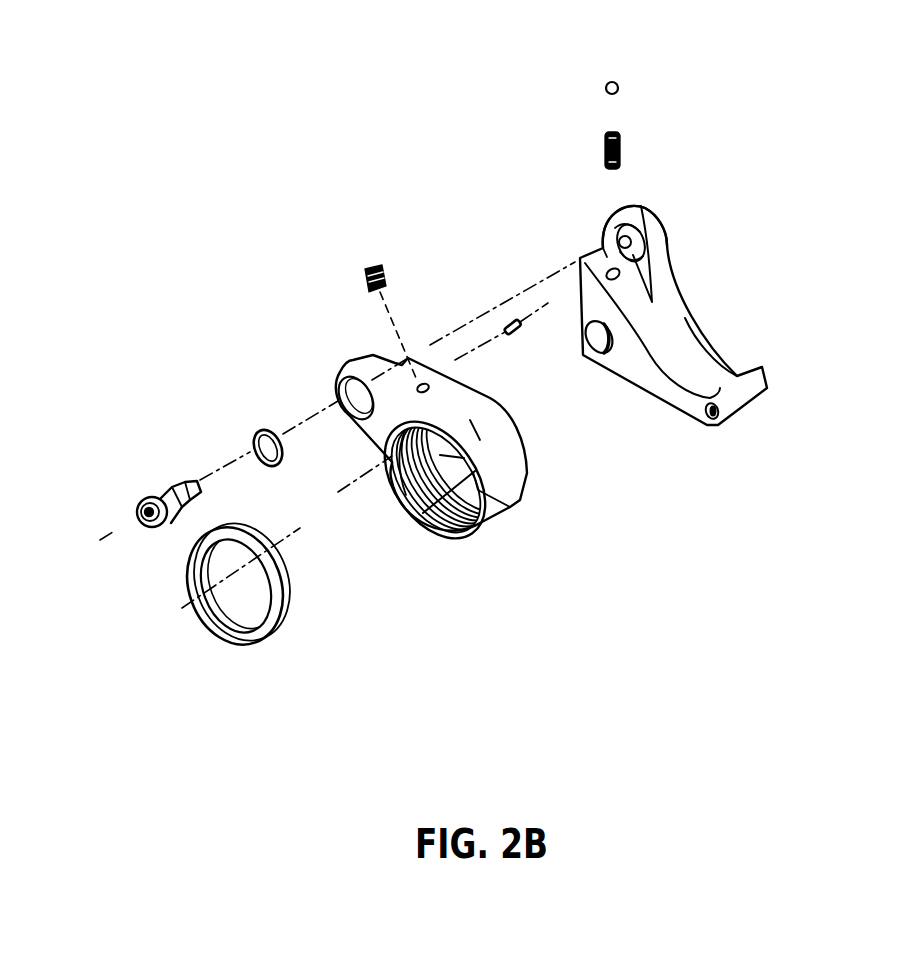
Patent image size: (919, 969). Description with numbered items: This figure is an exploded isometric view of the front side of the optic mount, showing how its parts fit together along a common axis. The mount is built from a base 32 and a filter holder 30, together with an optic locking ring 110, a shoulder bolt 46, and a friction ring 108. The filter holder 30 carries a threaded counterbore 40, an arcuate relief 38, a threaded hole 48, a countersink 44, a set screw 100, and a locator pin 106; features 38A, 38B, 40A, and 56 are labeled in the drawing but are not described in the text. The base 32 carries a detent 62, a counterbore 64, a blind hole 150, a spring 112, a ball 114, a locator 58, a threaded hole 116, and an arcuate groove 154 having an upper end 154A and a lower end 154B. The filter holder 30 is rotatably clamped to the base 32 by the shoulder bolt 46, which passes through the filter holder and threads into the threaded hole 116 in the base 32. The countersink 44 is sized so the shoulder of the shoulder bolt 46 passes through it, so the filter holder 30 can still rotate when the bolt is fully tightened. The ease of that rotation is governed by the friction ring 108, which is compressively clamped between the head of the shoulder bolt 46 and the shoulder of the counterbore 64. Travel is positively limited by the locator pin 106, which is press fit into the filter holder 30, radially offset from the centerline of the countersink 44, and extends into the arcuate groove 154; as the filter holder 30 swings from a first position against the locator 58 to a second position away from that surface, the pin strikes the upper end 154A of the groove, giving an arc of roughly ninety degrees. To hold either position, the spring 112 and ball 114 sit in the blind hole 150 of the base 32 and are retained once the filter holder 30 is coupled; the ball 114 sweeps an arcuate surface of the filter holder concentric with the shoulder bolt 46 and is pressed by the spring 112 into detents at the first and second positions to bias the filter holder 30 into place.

The filter holder 30 is at (506, 515).
The base 32 is at (765, 418).
The arcuate relief 38 is at (457, 512).
The bore bottom wall 38A is at (420, 507).
The bore side wall 38B is at (490, 487).
The threaded counterbore 40 is at (416, 460).
The thread entrance 40A is at (389, 455).
The countersink 44 is at (337, 390).
The shoulder bolt 46 is at (140, 500).
The threaded hole 48 is at (430, 389).
The bracket ear 56 is at (592, 212).
The locator 58 is at (700, 367).
The detent 62 is at (713, 425).
The counterbore 64 is at (580, 340).
The set screw 100 is at (360, 266).
The locator pin 106 is at (520, 336).
The friction ring 108 is at (247, 428).
The optic locking ring 110 is at (293, 622).
The spring 112 is at (628, 148).
The ball 114 is at (624, 82).
The threaded hole 116 is at (648, 252).
The blind hole 150 is at (607, 268).
The arcuate groove 154 is at (634, 240).
The upper end 154A is at (634, 216).
The lower end 154B is at (645, 248).